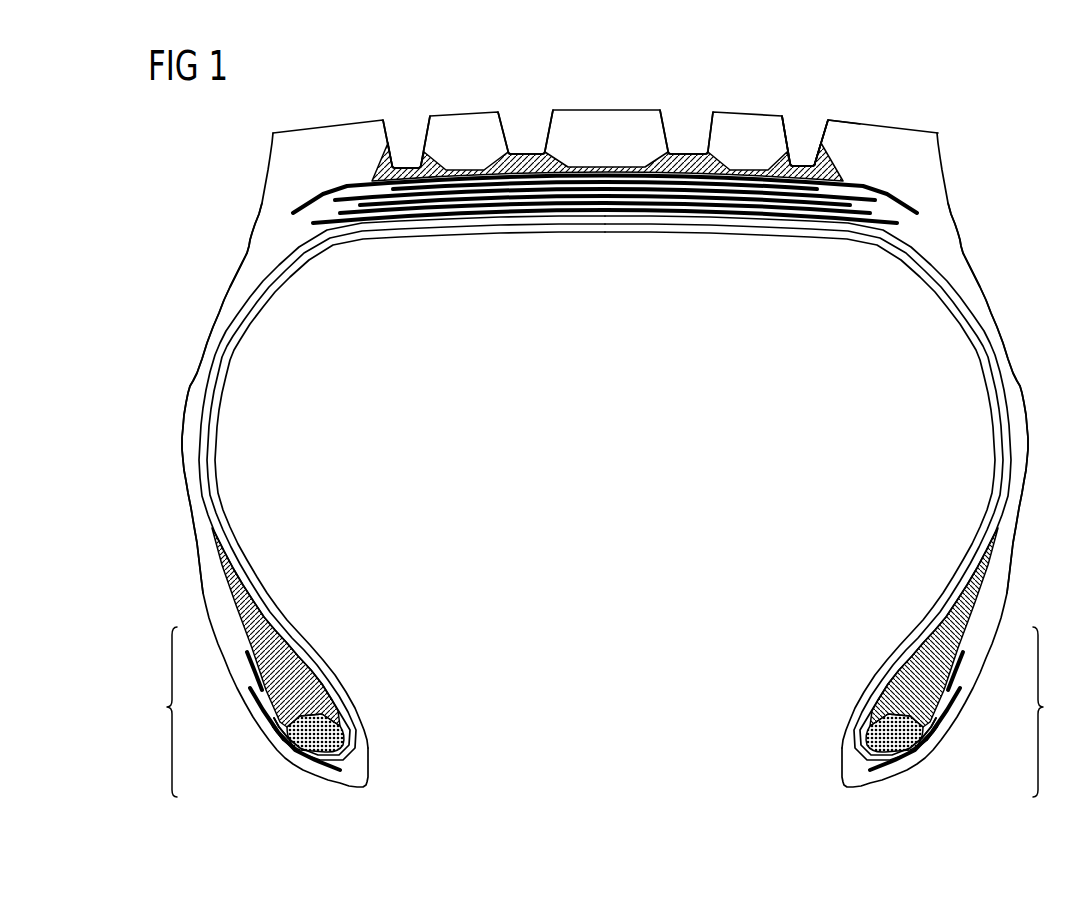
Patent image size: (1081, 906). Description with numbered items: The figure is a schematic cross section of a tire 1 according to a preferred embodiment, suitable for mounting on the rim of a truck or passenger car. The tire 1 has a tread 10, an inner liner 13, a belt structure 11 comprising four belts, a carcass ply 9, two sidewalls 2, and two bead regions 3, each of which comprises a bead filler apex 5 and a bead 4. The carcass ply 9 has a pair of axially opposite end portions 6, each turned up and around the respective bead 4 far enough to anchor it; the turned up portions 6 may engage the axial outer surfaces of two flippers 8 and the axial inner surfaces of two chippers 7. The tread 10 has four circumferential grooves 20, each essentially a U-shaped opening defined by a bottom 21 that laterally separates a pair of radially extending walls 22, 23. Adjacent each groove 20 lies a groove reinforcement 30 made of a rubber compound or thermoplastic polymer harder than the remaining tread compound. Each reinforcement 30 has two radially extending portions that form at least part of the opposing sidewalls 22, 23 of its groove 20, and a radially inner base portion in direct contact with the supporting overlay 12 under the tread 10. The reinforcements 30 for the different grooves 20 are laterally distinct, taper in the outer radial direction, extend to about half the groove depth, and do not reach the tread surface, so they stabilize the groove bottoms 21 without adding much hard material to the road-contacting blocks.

The tire 1 is at (216, 180).
The sidewall 2 is at (213, 327).
The bead region 3 is at (608, 712).
The bead 4 is at (338, 733).
The bead filler apex 5 is at (280, 637).
The end portion of the carcass ply 6 is at (247, 657).
The chipper 7 is at (253, 690).
The flipper 8 is at (280, 727).
The carcass ply 9 is at (333, 242).
The tread 10 is at (928, 158).
The belt structure 11 is at (723, 198).
The overlay 12 is at (583, 173).
The inner liner 13 is at (295, 280).
The circumferential groove 20 is at (402, 113).
The bottom 21 is at (815, 160).
The wall 22 is at (790, 137).
The wall 23 is at (833, 135).
The groove reinforcement 30 is at (375, 167).